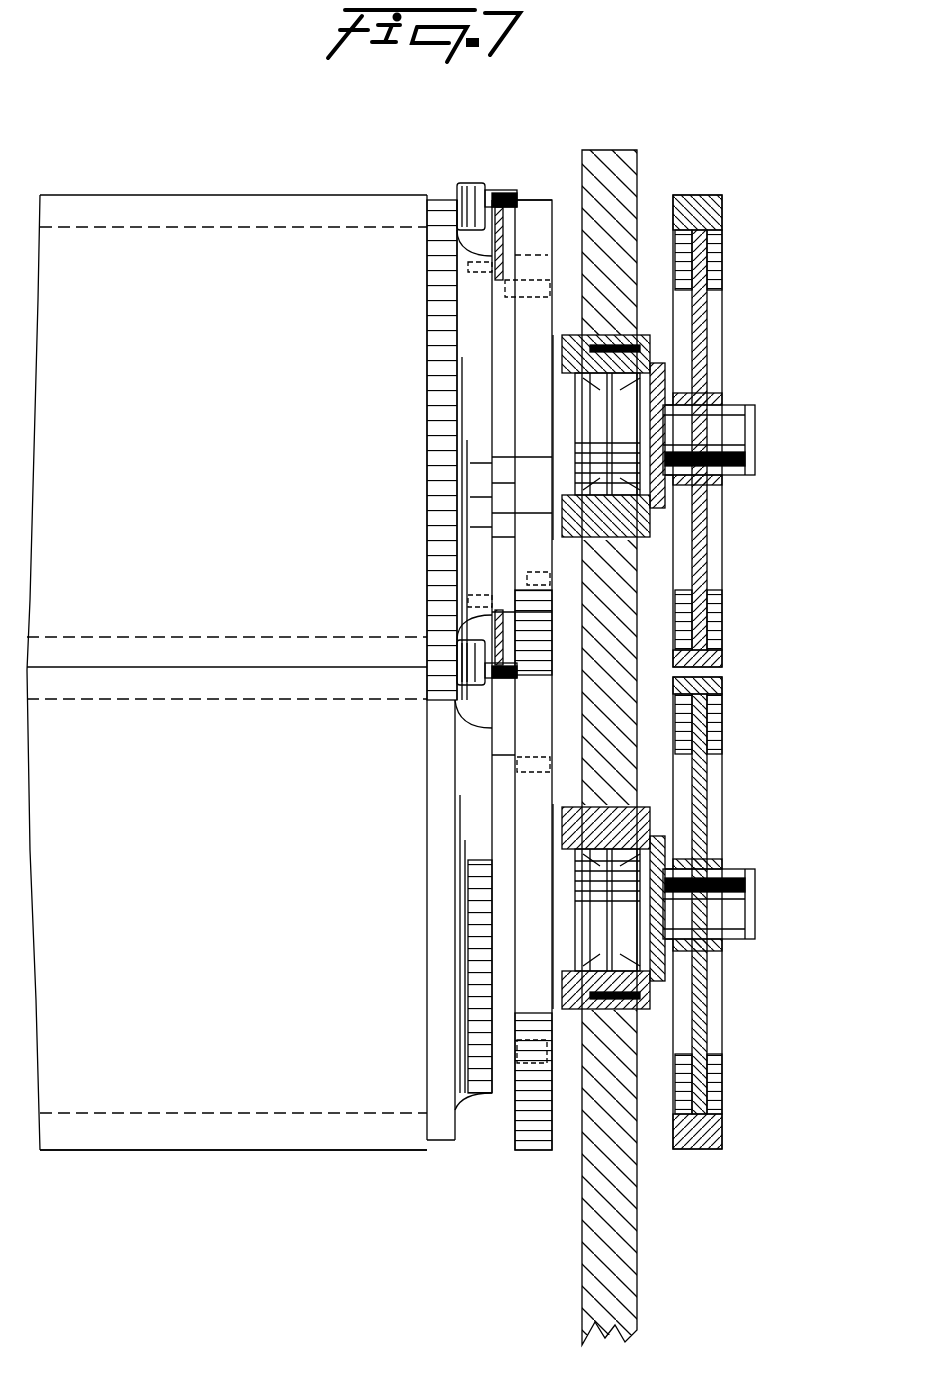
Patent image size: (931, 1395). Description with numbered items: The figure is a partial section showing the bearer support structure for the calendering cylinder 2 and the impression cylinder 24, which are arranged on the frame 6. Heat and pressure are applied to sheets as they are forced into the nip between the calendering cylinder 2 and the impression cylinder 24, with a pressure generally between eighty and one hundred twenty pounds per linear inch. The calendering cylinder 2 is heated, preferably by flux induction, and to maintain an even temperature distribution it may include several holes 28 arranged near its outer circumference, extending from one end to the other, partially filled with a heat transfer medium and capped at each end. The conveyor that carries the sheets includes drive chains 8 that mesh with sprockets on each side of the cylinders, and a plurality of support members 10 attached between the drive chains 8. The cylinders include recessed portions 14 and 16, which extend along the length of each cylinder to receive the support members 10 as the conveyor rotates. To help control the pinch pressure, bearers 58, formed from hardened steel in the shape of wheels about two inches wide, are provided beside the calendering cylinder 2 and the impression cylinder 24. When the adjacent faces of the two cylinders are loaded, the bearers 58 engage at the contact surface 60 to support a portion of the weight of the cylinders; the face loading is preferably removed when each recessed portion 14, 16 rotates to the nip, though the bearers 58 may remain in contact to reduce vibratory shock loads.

The calendering cylinder 2 is at (256, 246).
The frame 6 is at (628, 1228).
The drive chains 8 is at (509, 194).
The support members 10 is at (468, 176).
The recessed portion 14 is at (212, 655).
The recessed portion 16 is at (232, 697).
The impression cylinder 24 is at (130, 1095).
The holes 28 is at (530, 292).
The bearers 58 is at (537, 550).
The contact surface 60 is at (530, 672).